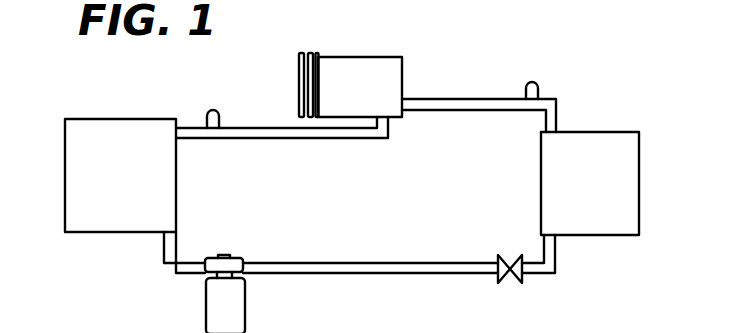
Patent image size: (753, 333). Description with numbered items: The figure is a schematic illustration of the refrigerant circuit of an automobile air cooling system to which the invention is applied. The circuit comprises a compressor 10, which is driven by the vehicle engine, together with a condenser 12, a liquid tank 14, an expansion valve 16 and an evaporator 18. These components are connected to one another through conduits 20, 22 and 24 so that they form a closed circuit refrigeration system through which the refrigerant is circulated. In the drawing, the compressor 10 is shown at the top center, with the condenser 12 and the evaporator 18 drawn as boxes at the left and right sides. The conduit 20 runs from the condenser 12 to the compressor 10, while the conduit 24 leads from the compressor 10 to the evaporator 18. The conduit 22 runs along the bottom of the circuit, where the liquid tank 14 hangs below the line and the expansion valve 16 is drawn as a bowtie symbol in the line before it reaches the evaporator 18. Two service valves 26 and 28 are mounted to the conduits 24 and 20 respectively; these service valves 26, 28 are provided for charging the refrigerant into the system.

The compressor 10 is at (352, 57).
The condenser 12 is at (122, 118).
The liquid tank 14 is at (245, 315).
The expansion valve 16 is at (512, 284).
The evaporator 18 is at (598, 236).
The conduit 20 is at (300, 139).
The conduit 22 is at (355, 263).
The conduit 24 is at (482, 111).
The service valve 26 is at (536, 83).
The service valve 28 is at (218, 112).